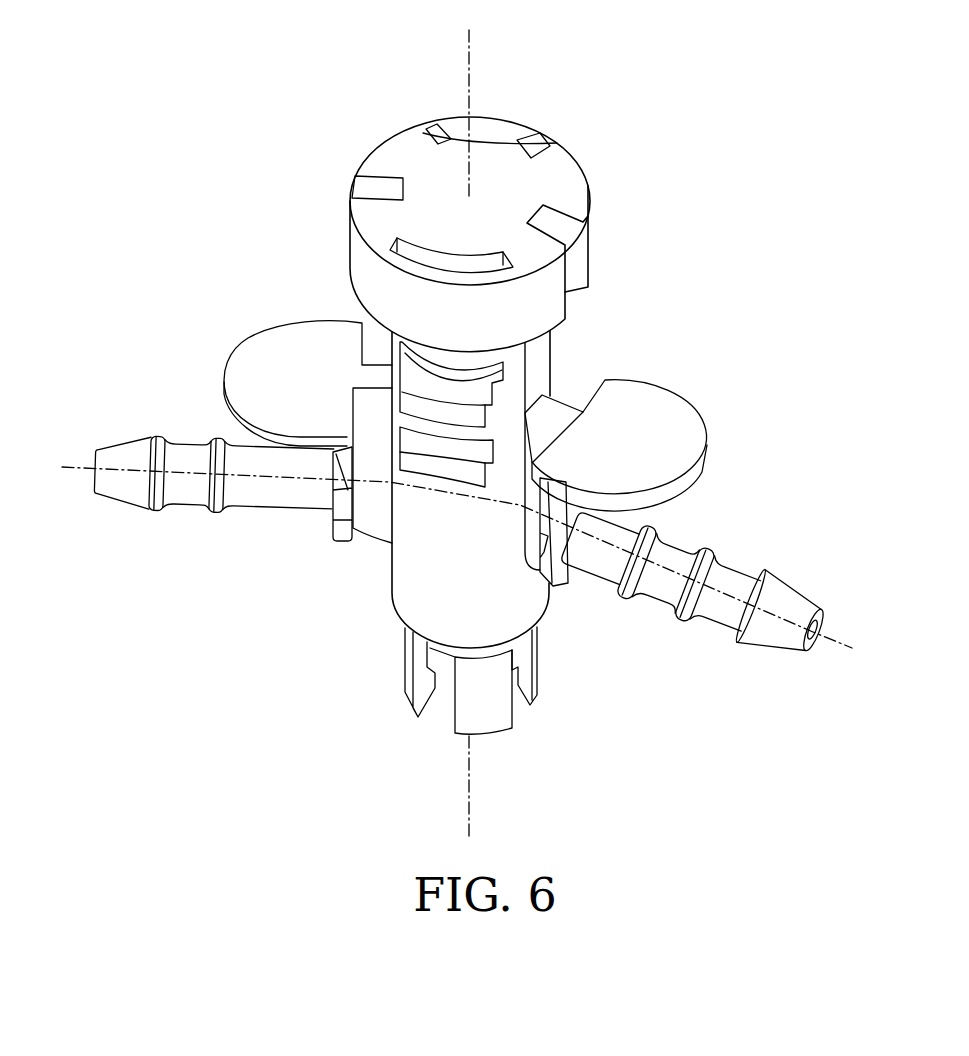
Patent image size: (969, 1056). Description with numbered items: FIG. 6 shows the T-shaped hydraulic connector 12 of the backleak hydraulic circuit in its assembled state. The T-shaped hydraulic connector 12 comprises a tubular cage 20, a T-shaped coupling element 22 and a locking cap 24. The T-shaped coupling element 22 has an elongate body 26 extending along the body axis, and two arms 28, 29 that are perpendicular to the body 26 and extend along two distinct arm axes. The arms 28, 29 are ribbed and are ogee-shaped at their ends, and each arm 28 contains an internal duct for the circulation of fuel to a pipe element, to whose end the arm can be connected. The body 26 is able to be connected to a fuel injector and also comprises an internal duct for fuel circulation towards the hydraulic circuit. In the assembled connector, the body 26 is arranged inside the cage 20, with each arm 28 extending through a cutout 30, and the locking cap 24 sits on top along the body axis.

The T-shaped hydraulic connector 12 is at (173, 371).
The tubular cage 20 is at (407, 572).
The T-shaped coupling element 22 is at (642, 423).
The locking cap 24 is at (503, 167).
The elongate body 26 is at (412, 683).
The arm 28 is at (193, 452).
The arm 29 is at (725, 575).
The cutout 30 is at (535, 350).